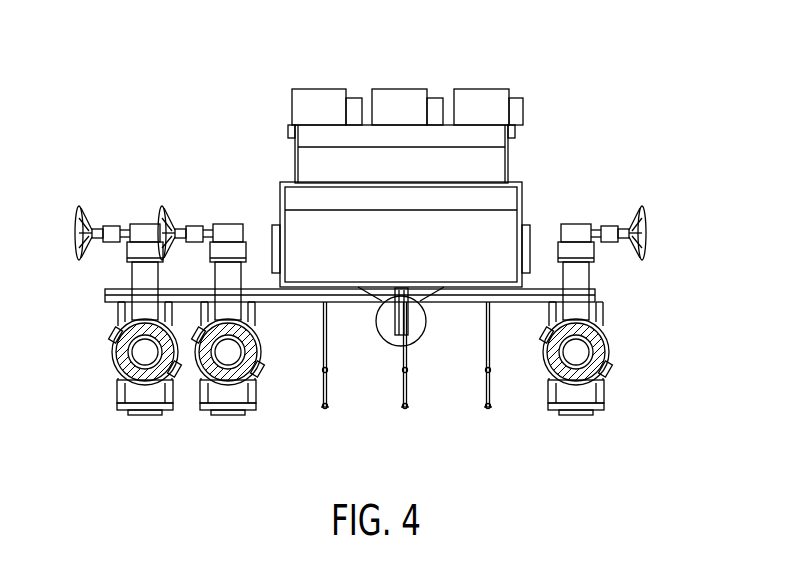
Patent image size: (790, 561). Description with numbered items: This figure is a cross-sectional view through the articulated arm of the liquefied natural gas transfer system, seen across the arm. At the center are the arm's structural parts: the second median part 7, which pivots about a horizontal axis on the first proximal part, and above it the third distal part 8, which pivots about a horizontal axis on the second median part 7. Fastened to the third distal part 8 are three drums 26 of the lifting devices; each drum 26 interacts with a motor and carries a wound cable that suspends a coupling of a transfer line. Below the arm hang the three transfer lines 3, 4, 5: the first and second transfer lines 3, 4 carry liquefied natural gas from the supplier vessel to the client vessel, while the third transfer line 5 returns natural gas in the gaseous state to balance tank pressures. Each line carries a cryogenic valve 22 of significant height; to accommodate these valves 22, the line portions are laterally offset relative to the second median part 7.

The drum 26 is at (318, 102).
The third distal part 8 is at (500, 157).
The second median part 7 is at (502, 222).
The cryogenic valve 22 is at (133, 276).
The first transfer line 3 is at (118, 376).
The second transfer line 4 is at (210, 383).
The third transfer line 5 is at (603, 370).